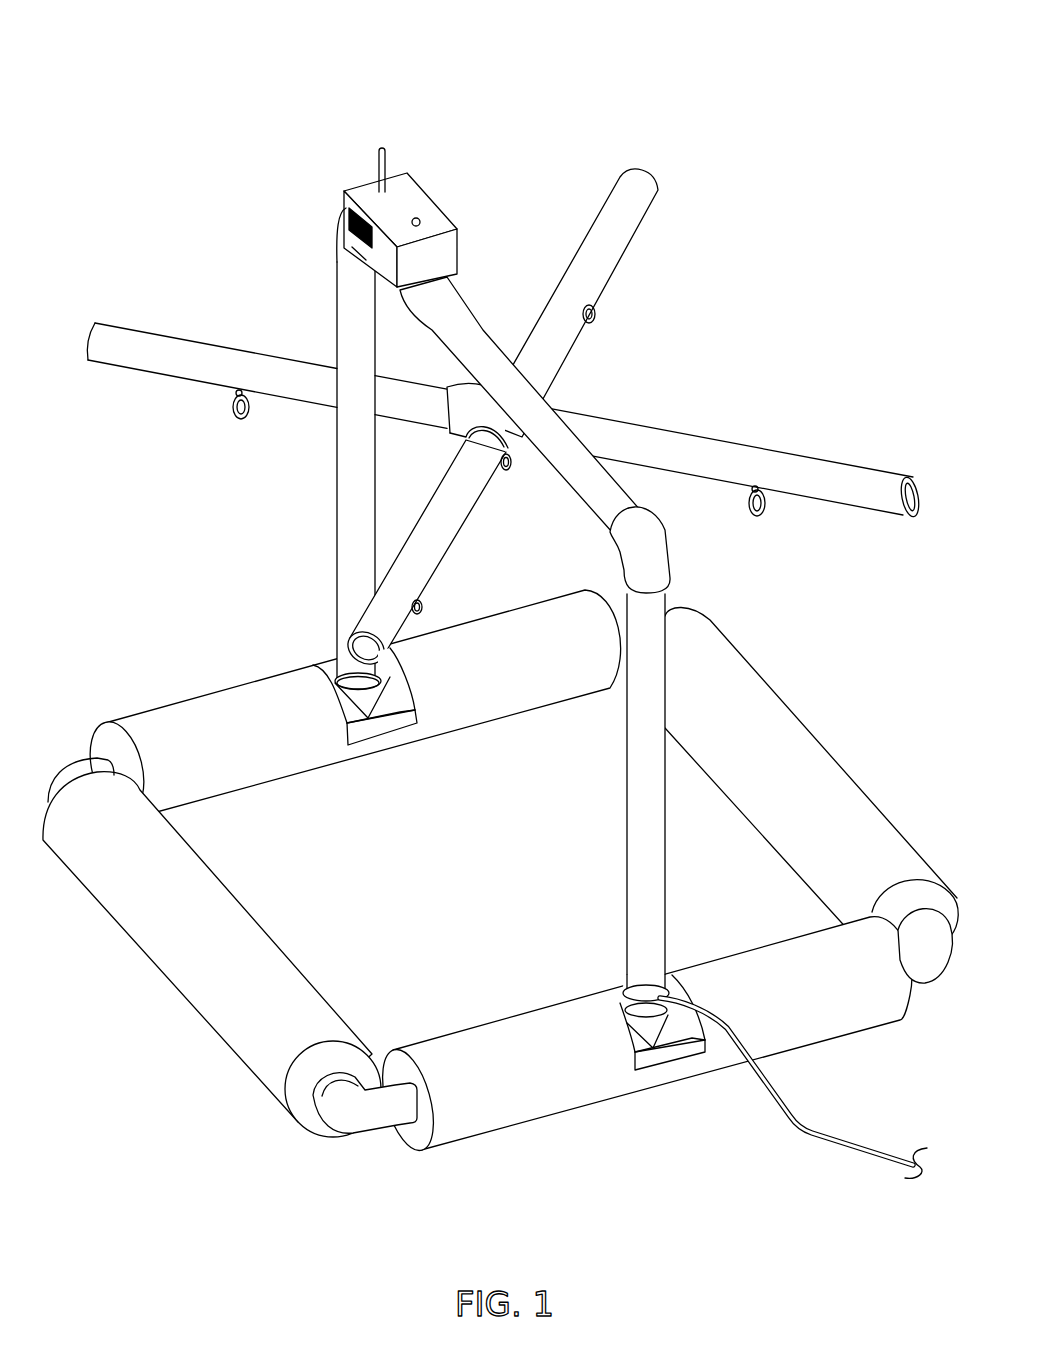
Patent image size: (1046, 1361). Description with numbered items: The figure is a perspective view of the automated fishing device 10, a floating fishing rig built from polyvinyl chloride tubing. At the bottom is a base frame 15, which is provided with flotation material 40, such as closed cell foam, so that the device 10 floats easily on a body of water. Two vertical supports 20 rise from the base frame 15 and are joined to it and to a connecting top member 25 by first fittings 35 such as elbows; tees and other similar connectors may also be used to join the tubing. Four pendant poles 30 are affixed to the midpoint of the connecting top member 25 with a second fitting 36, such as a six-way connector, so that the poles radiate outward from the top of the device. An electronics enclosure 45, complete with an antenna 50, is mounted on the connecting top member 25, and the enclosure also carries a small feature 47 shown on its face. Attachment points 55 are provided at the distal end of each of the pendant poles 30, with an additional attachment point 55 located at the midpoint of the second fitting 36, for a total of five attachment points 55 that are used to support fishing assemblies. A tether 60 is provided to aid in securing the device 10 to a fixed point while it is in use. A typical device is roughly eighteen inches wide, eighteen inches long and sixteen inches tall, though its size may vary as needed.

The automated fishing device 10 is at (130, 171).
The base frame 15 is at (113, 767).
The vertical supports 20 is at (350, 315).
The connecting top member 25 is at (465, 338).
The pendant poles 30 is at (265, 372).
The first fittings 35 is at (343, 225).
The second fitting 36 is at (465, 413).
The flotation material 40 is at (840, 810).
The electronics enclosure 45 is at (411, 197).
The indicator 47 is at (420, 220).
The antenna 50 is at (380, 150).
The attachment points 55 is at (235, 415).
The tether 60 is at (795, 1133).